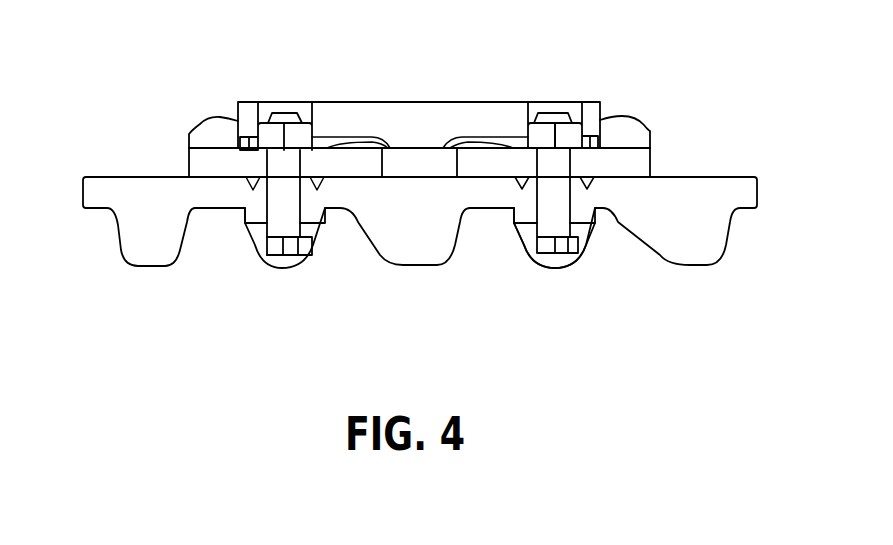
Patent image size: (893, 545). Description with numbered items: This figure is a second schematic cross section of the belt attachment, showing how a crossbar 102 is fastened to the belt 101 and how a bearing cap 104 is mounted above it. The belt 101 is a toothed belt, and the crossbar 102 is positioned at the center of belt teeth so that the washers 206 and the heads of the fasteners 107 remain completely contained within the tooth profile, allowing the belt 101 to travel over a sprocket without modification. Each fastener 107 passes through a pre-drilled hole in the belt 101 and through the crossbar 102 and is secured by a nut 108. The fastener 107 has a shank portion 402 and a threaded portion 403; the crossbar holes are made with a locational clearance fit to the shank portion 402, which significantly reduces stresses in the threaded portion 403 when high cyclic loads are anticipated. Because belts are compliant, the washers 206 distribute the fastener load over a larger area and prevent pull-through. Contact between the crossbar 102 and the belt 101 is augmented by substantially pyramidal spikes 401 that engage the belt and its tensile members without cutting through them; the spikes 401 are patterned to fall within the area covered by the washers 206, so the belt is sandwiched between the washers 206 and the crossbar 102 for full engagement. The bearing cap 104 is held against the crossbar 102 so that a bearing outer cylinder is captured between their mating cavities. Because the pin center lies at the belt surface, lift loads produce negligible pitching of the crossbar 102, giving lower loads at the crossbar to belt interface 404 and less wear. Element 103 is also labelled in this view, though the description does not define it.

The belt 101 is at (142, 210).
The crossbar 102 is at (217, 162).
The top plate 103 is at (350, 115).
The bearing cap 104 is at (207, 138).
The fastener 107 is at (280, 228).
The nut 108 is at (267, 133).
The washer 206 is at (315, 227).
The spike 401 is at (505, 142).
The shank portion 402 is at (528, 222).
The threaded portion 403 is at (570, 133).
The crossbar to belt interface 404 is at (347, 180).